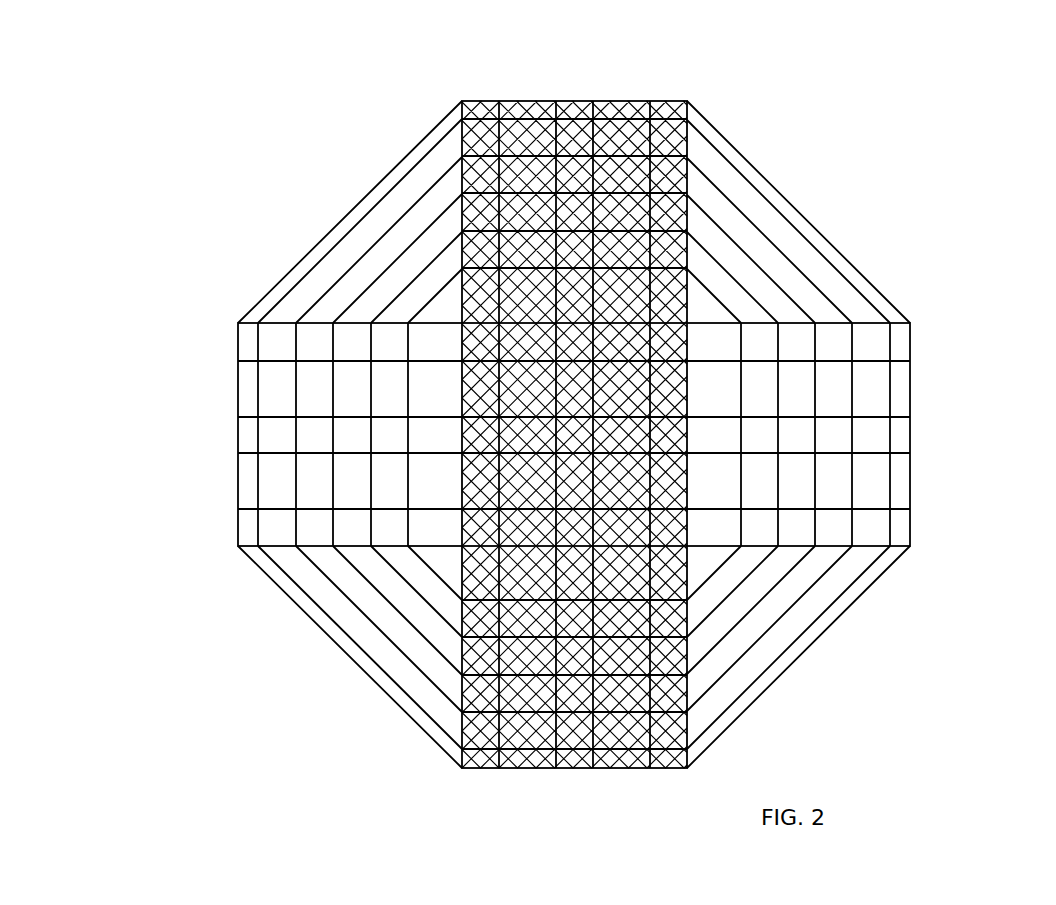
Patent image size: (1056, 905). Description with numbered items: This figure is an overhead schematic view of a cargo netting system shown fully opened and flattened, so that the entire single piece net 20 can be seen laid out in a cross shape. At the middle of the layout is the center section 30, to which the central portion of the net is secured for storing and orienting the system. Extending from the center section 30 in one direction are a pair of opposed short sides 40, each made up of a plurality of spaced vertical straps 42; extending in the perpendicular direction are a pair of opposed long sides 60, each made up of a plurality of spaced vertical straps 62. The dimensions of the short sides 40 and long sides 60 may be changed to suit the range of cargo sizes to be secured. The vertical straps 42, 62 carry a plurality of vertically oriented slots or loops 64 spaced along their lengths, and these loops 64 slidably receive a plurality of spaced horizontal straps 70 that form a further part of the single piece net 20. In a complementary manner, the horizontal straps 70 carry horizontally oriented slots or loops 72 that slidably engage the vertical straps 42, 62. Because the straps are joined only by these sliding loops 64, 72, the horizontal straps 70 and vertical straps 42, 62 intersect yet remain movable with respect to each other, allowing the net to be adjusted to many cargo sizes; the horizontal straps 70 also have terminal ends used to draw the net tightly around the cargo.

The single-piece net 20 is at (667, 320).
The center section 30 is at (627, 395).
The short sides 40 is at (172, 323).
The spaced vertical straps 42 is at (237, 323).
The long sides 60 is at (462, 77).
The spaced vertical straps 62 is at (686, 101).
The vertically oriented slots or loops 64 is at (593, 260).
The spaced horizontal straps 70 is at (462, 587).
The horizontally oriented slots or loops 72 is at (367, 415).